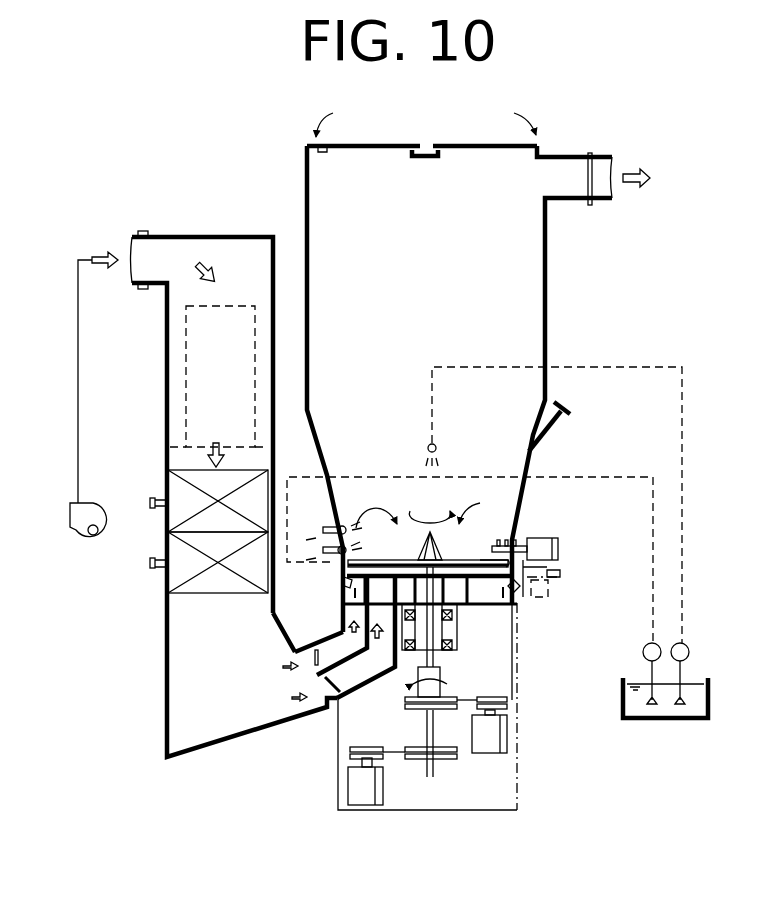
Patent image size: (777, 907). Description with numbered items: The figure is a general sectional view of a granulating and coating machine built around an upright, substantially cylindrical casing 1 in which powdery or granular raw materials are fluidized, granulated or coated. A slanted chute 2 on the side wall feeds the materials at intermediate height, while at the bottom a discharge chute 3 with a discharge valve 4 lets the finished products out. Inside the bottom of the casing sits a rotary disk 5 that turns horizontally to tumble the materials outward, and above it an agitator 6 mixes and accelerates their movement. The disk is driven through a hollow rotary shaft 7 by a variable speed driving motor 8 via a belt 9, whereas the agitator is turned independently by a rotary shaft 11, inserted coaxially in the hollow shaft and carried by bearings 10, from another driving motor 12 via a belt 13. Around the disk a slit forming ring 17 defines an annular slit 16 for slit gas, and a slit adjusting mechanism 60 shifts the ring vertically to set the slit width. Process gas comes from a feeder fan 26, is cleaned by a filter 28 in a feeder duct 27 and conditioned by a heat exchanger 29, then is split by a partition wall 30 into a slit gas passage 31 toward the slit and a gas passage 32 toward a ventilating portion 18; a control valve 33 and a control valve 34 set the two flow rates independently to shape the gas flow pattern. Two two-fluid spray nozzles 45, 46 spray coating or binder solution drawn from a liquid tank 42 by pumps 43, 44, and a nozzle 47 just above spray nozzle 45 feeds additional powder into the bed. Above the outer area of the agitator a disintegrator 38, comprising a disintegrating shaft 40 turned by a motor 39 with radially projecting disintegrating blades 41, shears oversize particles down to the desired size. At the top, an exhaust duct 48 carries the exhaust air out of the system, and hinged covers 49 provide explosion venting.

The casing 1 is at (552, 281).
The chute 2 is at (561, 421).
The discharge chute 3 is at (562, 592).
The discharge valve 4 is at (560, 566).
The rotary disk 5 is at (402, 560).
The agitator 6 is at (472, 562).
The hollow rotary shaft 7 is at (443, 652).
The driving motor 8 is at (490, 750).
The belt 9 is at (478, 698).
The bearings 10 is at (445, 587).
The rotary shaft 11 is at (433, 772).
The driving motor 12 is at (365, 800).
The belt 13 is at (385, 758).
The slit 16 is at (342, 582).
The slit forming ring 17 is at (352, 592).
The ventilating portion 18 is at (485, 578).
The feeder fan 26 is at (93, 547).
The feeder duct 27 is at (165, 665).
The filter 28 is at (187, 385).
The heat exchanger 29 is at (172, 585).
The partition wall 30 is at (313, 673).
The slit gas passage 31 is at (295, 648).
The gas passage 32 is at (362, 670).
The control valve 33 is at (315, 660).
The control valve 34 is at (330, 692).
The disintegrator 38 is at (556, 532).
The motor 39 is at (560, 550).
The disintegrating shaft 40 is at (537, 538).
The disintegrating blades 41 is at (512, 540).
The liquid tank 42 is at (653, 720).
The pump 43 is at (642, 652).
The pump 44 is at (690, 652).
The spray nozzle 45 is at (338, 553).
The spray nozzle 46 is at (436, 448).
The nozzle 47 is at (338, 527).
The exhaust duct 48 is at (580, 152).
The covers 49 is at (358, 143).
The slit adjusting mechanism 60 is at (520, 590).